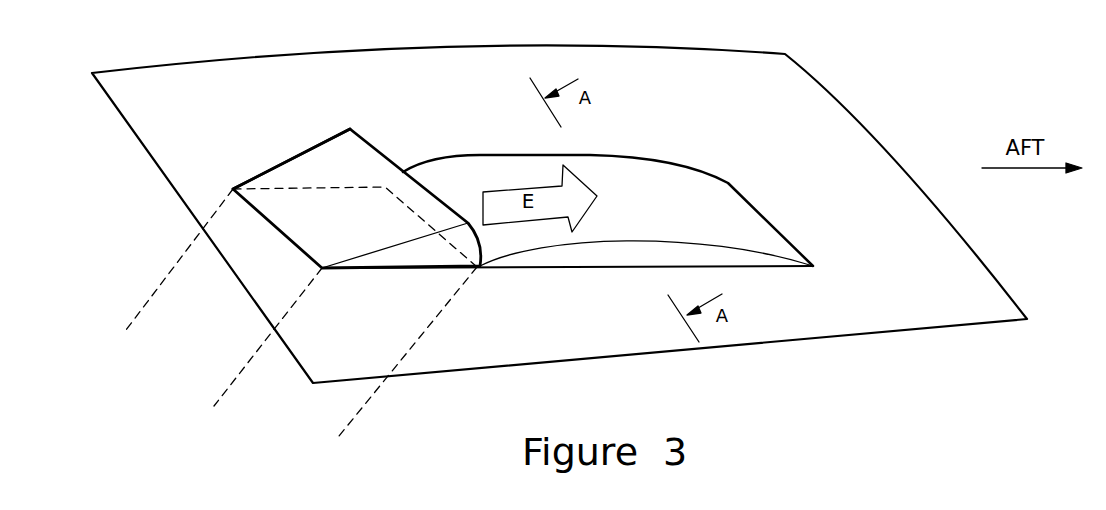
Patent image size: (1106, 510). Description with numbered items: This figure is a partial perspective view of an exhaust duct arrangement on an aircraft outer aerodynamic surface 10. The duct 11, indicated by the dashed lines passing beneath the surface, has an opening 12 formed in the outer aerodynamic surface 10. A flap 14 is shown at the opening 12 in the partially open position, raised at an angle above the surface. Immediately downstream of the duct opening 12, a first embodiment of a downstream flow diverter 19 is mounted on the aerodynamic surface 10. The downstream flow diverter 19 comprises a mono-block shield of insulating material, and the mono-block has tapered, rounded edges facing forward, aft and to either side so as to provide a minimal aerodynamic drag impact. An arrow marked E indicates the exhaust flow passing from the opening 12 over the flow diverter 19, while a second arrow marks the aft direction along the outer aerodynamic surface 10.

The outer aerodynamic surface 10 is at (830, 117).
The duct 11 is at (172, 279).
The opening 12 is at (312, 207).
The flap 14 is at (315, 142).
The downstream flow diverter 19 is at (683, 182).